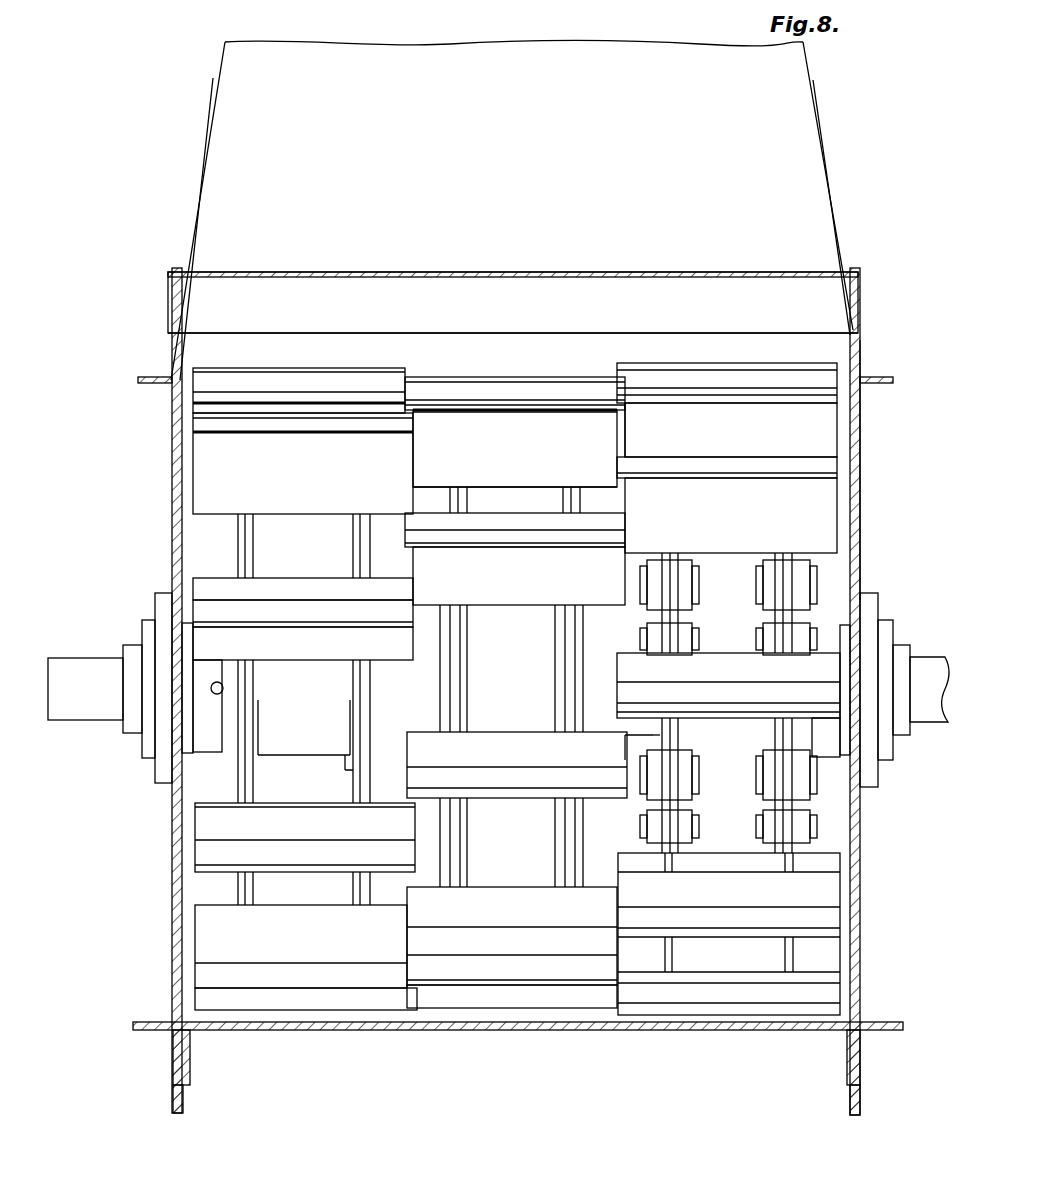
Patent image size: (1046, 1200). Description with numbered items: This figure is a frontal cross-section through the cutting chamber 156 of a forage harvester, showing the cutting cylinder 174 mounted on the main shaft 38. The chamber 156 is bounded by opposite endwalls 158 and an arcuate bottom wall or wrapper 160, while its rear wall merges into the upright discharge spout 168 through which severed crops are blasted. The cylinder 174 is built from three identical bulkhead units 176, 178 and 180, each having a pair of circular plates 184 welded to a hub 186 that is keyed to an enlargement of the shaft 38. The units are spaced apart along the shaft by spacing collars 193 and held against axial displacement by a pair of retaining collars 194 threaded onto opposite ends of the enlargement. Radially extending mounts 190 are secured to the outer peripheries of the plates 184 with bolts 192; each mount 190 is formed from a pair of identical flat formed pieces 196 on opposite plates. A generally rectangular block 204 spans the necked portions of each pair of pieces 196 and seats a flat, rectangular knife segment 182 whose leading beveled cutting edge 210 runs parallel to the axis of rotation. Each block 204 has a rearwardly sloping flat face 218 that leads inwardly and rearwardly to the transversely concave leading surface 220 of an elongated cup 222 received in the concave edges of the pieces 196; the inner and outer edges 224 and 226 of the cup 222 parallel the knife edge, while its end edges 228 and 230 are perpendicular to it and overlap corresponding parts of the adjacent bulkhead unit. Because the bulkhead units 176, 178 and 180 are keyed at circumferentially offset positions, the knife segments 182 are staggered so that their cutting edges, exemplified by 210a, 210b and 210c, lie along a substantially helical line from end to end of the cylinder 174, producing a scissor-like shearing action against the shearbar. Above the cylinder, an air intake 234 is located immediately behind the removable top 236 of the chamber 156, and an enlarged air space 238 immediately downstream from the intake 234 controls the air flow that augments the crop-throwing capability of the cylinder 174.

The main shaft 38 is at (78, 668).
The cutting chamber 156 is at (860, 930).
The endwalls 158 is at (173, 856).
The arcuate bottom wall or wrapper 160 is at (445, 1030).
The upright discharge spout 168 is at (805, 130).
The cutting cylinder 174 is at (838, 494).
The bulkhead unit 176 is at (814, 606).
The bulkhead unit 178 is at (512, 610).
The bulkhead unit 180 is at (336, 770).
The flat knife segments 182 is at (450, 375).
The circular plates 184 is at (357, 890).
The hub 186 is at (716, 633).
The mounts 190 is at (645, 806).
The bolts 192 is at (763, 832).
The spacing collars 193 is at (600, 648).
The retaining collars 194 is at (218, 758).
The flat formed pieces 196 is at (357, 733).
The block 204 is at (300, 580).
The cutting edge 210 is at (476, 383).
The cutting edge 210a is at (322, 640).
The cutting edge 210b is at (468, 570).
The cutting edge 210c is at (768, 500).
The rearwardly sloping flat face 218 is at (527, 390).
The leading surface 220 is at (515, 448).
The cup 222 is at (425, 467).
The inner edge 224 is at (540, 487).
The outer edge 226 is at (558, 405).
The end edge 228 is at (628, 435).
The end edge 230 is at (395, 412).
The air intake 234 is at (322, 348).
The removable top 236 is at (288, 272).
The enlarged air space 238 is at (512, 292).